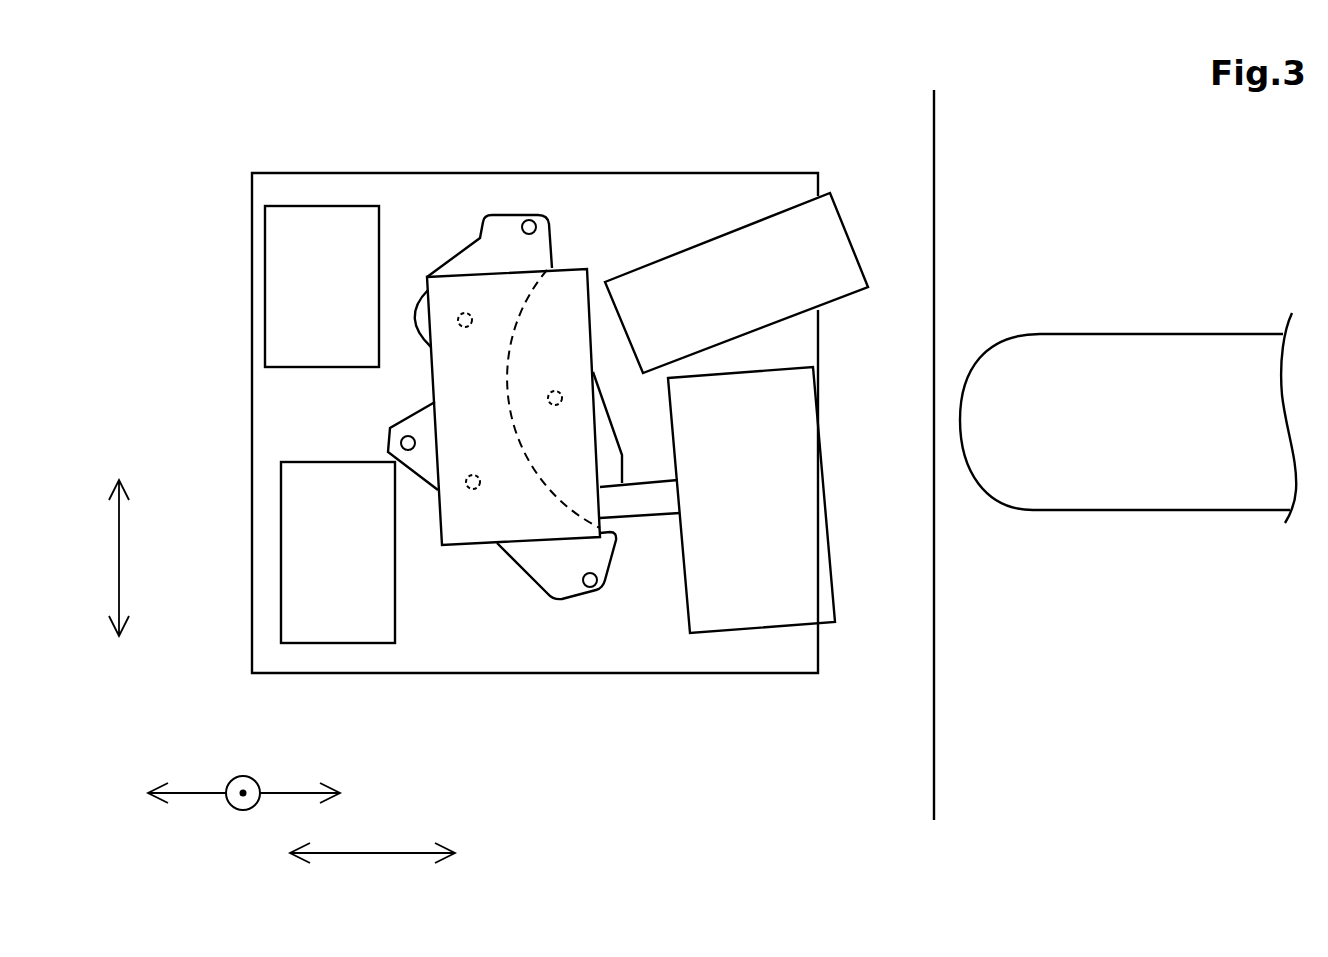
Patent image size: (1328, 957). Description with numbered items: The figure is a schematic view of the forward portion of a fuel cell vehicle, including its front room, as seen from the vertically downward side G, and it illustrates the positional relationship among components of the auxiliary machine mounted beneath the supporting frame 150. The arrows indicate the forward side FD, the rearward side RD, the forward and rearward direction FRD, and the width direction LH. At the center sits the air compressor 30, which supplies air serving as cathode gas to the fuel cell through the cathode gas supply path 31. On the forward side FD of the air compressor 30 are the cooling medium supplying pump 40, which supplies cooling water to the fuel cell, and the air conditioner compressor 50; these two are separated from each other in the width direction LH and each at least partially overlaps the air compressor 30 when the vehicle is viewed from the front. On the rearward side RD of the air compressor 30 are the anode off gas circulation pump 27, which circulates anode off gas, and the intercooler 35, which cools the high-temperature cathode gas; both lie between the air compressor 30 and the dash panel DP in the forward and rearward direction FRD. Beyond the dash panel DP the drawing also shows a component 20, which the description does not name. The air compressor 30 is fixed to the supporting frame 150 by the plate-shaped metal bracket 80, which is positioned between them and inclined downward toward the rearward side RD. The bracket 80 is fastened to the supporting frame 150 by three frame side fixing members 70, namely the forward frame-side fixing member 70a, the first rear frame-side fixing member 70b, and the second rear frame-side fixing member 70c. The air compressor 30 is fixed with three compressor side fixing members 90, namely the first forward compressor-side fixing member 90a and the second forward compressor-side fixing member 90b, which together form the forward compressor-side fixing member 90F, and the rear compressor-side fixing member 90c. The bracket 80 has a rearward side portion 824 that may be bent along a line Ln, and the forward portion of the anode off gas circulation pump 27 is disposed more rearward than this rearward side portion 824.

The display panel / vehicle body part 20 is at (1160, 333).
The anode off gas circulation pump 27 is at (741, 246).
The air compressor 30 is at (488, 304).
The cathode gas supply path 31 is at (643, 507).
The intercooler 35 is at (815, 472).
The cooling medium supplying pump 40 is at (373, 632).
The air conditioner compressor 50 is at (298, 222).
The frame side fixing members 70 is at (521, 419).
The forward frame-side fixing member 70a is at (409, 450).
The first rear frame-side fixing member 70b is at (591, 587).
The second rear frame-side fixing member 70c is at (530, 220).
The bracket 80 is at (410, 413).
The compressor side fixing members 90 is at (489, 413).
The first forward compressor-side fixing member 90a is at (461, 313).
The second forward compressor-side fixing member 90b is at (474, 489).
The rear compressor-side fixing member 90c is at (555, 390).
The forward compressor-side fixing member 90F is at (446, 413).
The supporting frame 150 is at (768, 172).
The rearward side portion 824 is at (603, 446).
The dash panel DP is at (934, 138).
The line Ln is at (562, 508).
The width direction LH is at (119, 557).
The vertically downward side G is at (243, 810).
The forward side FD is at (164, 793).
The rearward side RD is at (321, 793).
The forward and rearward direction FRD is at (372, 844).